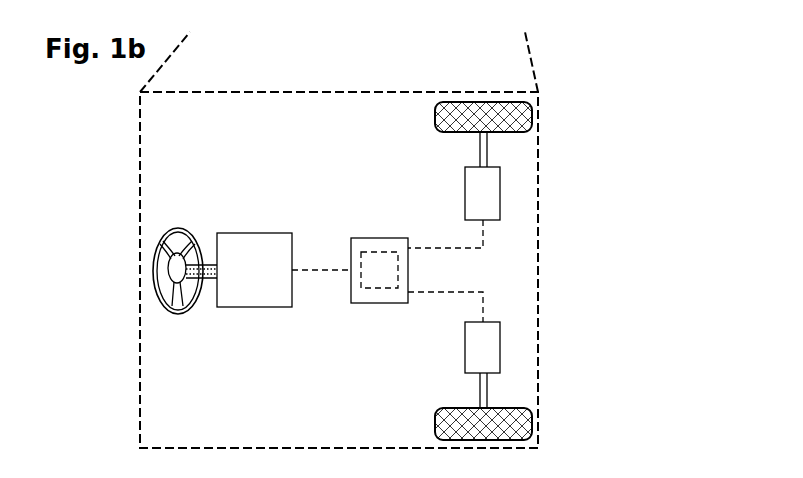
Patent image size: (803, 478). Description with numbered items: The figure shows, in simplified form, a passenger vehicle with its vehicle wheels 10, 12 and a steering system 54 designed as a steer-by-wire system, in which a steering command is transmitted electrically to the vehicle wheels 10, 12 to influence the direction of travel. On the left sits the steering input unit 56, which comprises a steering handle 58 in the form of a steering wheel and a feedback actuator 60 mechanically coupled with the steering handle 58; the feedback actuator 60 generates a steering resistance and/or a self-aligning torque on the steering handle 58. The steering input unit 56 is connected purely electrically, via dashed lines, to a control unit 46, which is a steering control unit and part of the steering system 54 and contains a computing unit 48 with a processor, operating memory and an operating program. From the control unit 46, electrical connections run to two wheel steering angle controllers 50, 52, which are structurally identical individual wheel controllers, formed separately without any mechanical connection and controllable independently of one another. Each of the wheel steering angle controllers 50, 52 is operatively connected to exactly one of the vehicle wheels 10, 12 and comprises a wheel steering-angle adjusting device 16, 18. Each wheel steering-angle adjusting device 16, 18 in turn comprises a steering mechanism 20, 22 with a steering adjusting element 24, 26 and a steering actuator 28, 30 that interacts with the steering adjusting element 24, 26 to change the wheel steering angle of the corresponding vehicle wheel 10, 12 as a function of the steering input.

The vehicle wheel 10 is at (532, 425).
The vehicle wheel 12 is at (532, 118).
The wheel steering-angle adjusting device 16 is at (520, 369).
The wheel steering-angle adjusting device 18 is at (520, 176).
The steering mechanism 20 is at (547, 395).
The steering mechanism 22 is at (547, 148).
The steering adjusting element 24 is at (478, 391).
The steering adjusting element 26 is at (478, 151).
The steering actuator 28 is at (512, 323).
The steering actuator 30 is at (512, 218).
The control unit 46 is at (391, 234).
The computing unit 48 is at (376, 251).
The wheel steering angle controller 50 is at (564, 344).
The wheel steering angle controller 52 is at (564, 194).
The steering system 54 is at (509, 268).
The steering input unit 56 is at (206, 203).
The steering handle 58 is at (172, 228).
The feedback actuator 60 is at (273, 233).